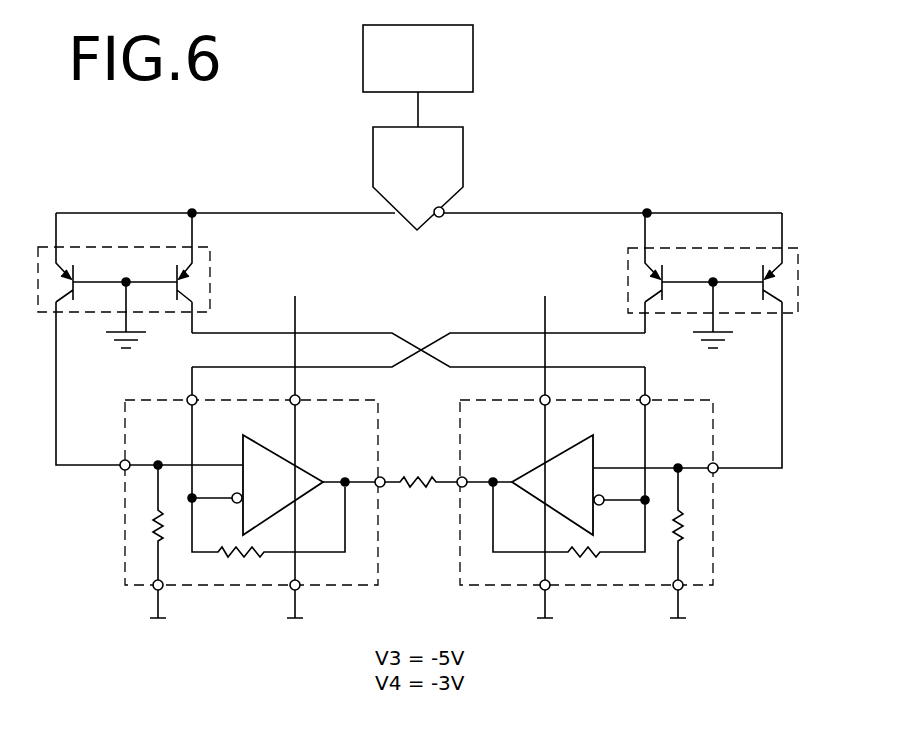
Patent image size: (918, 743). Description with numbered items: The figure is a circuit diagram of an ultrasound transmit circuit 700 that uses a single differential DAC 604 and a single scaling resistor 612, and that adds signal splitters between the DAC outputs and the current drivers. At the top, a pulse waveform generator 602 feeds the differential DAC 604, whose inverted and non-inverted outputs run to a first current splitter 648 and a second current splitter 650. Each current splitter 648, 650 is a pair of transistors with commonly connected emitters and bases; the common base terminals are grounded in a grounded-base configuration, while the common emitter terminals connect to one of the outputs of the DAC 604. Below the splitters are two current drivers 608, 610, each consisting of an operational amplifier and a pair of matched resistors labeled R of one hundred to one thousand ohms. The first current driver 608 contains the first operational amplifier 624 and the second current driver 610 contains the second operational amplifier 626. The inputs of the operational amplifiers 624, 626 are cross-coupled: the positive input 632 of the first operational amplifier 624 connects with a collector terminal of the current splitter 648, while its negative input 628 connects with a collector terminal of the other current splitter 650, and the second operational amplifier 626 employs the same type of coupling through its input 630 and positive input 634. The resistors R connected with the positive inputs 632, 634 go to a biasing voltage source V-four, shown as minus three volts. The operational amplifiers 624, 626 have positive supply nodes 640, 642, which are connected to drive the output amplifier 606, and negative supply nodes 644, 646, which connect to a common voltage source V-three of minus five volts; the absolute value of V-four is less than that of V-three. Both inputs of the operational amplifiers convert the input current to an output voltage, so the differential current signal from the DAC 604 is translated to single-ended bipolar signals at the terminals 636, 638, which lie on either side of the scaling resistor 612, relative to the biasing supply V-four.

The pulse waveform generator 602 is at (473, 53).
The differential DAC 604 is at (463, 152).
The output amplifier 606 is at (551, 298).
The current driver 608 is at (137, 585).
The current driver 610 is at (478, 585).
The scaling resistor 612 is at (415, 477).
The first operational amplifier 624 is at (258, 440).
The second operational amplifier 626 is at (575, 440).
The negative input 628 is at (188, 395).
The input 630 is at (650, 397).
The positive input 632 is at (122, 460).
The positive input 634 is at (718, 464).
The terminal 636 is at (380, 490).
The terminal 638 is at (460, 488).
The positive supply node 640 is at (290, 397).
The positive supply node 642 is at (540, 397).
The negative supply node 644 is at (290, 590).
The negative supply node 646 is at (540, 590).
The current splitter 648 is at (124, 280).
The current splitter 650 is at (713, 280).
The transmit circuit 700 is at (652, 132).